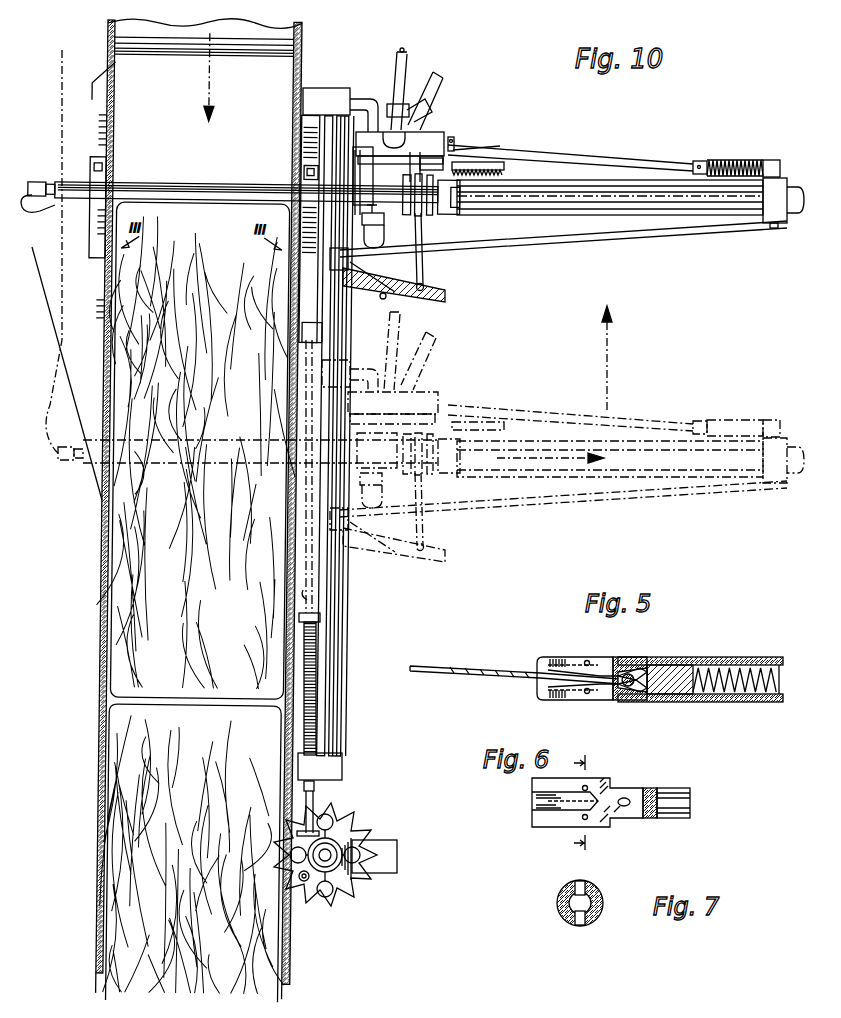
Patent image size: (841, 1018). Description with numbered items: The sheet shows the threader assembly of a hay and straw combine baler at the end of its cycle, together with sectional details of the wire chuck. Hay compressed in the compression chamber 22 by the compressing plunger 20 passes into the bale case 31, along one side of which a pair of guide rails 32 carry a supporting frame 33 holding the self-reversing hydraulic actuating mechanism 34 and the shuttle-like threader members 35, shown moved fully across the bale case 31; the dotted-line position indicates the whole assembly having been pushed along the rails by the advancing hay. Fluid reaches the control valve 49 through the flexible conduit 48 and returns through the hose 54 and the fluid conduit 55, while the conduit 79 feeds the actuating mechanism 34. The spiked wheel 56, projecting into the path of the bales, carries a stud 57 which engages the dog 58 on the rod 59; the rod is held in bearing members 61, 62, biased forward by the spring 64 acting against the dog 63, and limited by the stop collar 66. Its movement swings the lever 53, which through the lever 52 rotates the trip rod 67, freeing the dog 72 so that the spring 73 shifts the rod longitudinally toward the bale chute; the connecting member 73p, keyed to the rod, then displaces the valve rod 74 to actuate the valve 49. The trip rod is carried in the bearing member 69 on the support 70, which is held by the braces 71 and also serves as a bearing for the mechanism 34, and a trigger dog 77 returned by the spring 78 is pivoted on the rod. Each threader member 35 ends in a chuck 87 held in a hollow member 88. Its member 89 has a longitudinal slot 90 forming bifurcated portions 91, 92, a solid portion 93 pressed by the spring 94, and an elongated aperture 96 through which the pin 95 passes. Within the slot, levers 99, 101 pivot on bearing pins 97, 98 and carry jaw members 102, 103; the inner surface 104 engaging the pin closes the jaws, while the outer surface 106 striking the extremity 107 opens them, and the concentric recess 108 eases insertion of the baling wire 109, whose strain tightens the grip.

In FIG. 10, the compressing plunger 20 is at (234, 48).
In FIG. 10, the compression chamber 22 is at (128, 68).
In FIG. 10, the bale case 31 is at (99, 712).
In FIG. 10, the guide rails 32 is at (332, 680).
In FIG. 10, the supporting frame 33 is at (350, 262).
In FIG. 10, the hydraulic actuating mechanism 34 is at (541, 207).
In FIG. 10, the threader members 35 is at (220, 182).
In FIG. 10, the flexible conduit 48 is at (405, 81).
In FIG. 10, the control valve 49 is at (432, 136).
In FIG. 10, the lever 52 is at (422, 264).
In FIG. 10, the lever 53 is at (366, 310).
In FIG. 10, the hose 54 is at (440, 86).
In FIG. 10, the fluid conduit 55 is at (384, 233).
In FIG. 10, the spiked wheel 56 is at (350, 904).
In FIG. 10, the stud 57 is at (303, 893).
In FIG. 10, the dog 58 is at (326, 825).
In FIG. 10, the rod 59 is at (303, 605).
In FIG. 10, the bearing member 61 is at (343, 770).
In FIG. 10, the bearing member 62 is at (322, 332).
In FIG. 10, the dog 63 is at (320, 620).
In FIG. 10, the spring 64 is at (316, 650).
In FIG. 10, the stop collar 66 is at (316, 787).
In FIG. 10, the trip rod 67 is at (664, 166).
In FIG. 10, the bearing member 69 is at (771, 162).
In FIG. 10, the support 70 is at (784, 225).
In FIG. 10, the braces 71 is at (510, 150).
In FIG. 10, the dog 72 is at (697, 162).
In FIG. 10, the spring 73 is at (733, 162).
In FIG. 10, the connecting member 73p is at (462, 150).
In FIG. 10, the valve rod 74 is at (455, 143).
In FIG. 10, the trigger dog 77 is at (465, 178).
In FIG. 10, the spring 78 is at (492, 178).
In FIG. 10, the conduit 79 is at (365, 100).
In FIG. 10, the chuck 87 is at (42, 182).
In FIG. 5, the chuck 87 is at (560, 658).
In FIG. 5, the hollow member 88 is at (732, 700).
In FIG. 6, the member 89 is at (605, 785).
In FIG. 7, the longitudinal slot 90 is at (582, 884).
In FIG. 7, the bifurcated portion 91 is at (573, 921).
In FIG. 7, the bifurcated portion 92 is at (584, 921).
In FIG. 5, the solid portion 93 is at (660, 690).
In FIG. 6, the solid portion 93 is at (691, 800).
In FIG. 5, the spring 94 is at (752, 668).
In FIG. 5, the pin 95 is at (630, 673).
In FIG. 6, the elongated aperture 96 is at (623, 808).
In FIG. 5, the bearing pin 97 is at (587, 660).
In FIG. 5, the bearing pin 98 is at (587, 694).
In FIG. 5, the lever 99 is at (545, 659).
In FIG. 5, the lever 101 is at (560, 695).
In FIG. 5, the jaw member 102 is at (542, 672).
In FIG. 5, the jaw member 103 is at (541, 688).
In FIG. 5, the inner surface 104 is at (645, 684).
In FIG. 5, the outer surface 106 is at (640, 674).
In FIG. 5, the extremity 107 is at (617, 657).
In FIG. 6, the concentric recess 108 is at (537, 800).
In FIG. 10, the baling wire 109 is at (23, 208).
In FIG. 5, the baling wire 109 is at (486, 677).